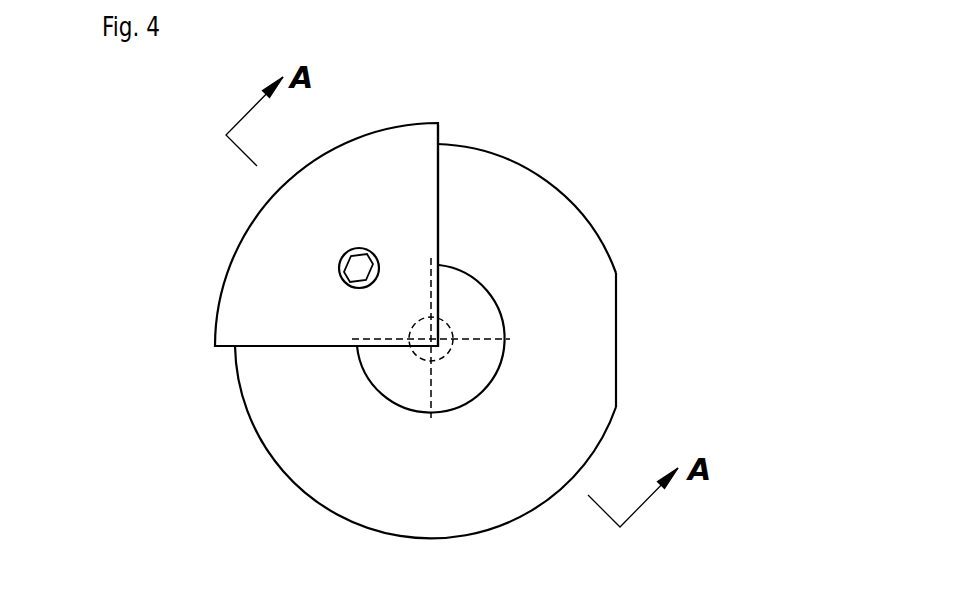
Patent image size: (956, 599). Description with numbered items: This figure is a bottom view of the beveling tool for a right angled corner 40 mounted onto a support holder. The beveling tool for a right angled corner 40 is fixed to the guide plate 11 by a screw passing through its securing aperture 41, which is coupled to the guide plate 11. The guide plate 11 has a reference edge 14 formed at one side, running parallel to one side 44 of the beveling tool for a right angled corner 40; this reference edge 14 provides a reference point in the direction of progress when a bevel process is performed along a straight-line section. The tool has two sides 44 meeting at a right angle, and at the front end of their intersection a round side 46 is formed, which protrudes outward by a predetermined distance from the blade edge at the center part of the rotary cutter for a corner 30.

The guide plate 11 is at (553, 253).
The reference edge 14 is at (618, 340).
The rotary cutter for a corner 30 is at (432, 343).
The beveling tool for a right angled corner 40 is at (265, 288).
The securing aperture 41 is at (362, 268).
The side 44 is at (438, 230).
The round side 46 is at (432, 343).